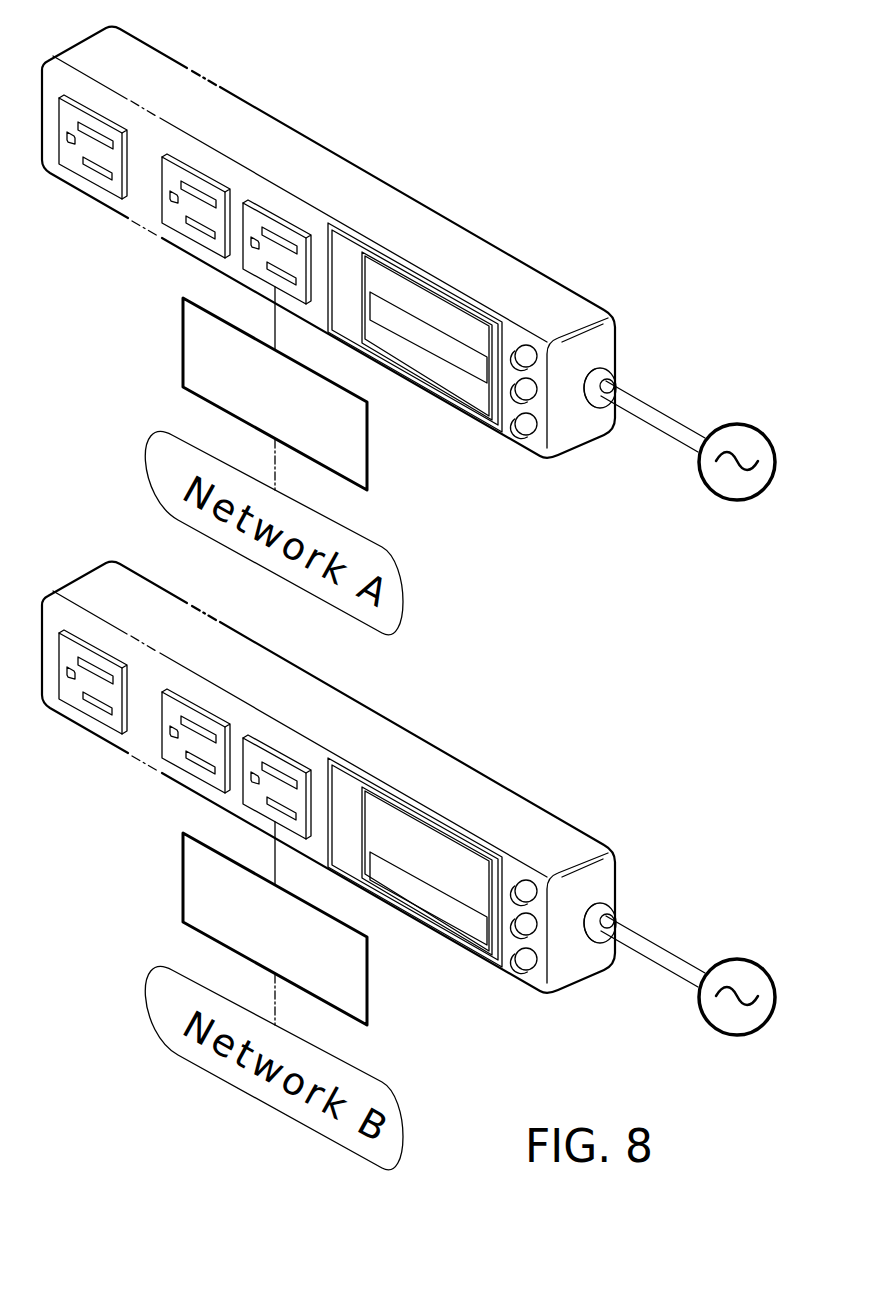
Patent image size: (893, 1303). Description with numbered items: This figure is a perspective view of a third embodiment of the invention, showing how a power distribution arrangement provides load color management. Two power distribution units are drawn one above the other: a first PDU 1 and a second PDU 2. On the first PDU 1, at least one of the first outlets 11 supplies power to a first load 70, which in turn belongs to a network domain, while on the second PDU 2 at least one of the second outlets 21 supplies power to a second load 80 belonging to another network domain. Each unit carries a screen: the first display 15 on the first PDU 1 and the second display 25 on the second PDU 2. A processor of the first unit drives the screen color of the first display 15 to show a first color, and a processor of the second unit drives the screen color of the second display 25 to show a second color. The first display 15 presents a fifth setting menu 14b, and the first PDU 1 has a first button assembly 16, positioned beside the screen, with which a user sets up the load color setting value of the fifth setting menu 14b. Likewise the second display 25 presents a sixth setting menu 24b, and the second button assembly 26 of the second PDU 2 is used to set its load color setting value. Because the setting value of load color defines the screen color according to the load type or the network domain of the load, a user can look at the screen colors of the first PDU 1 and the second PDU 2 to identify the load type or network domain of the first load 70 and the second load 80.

The first PDU 1 is at (408, 266).
The second PDU 2 is at (408, 801).
The first outlet 11 is at (277, 213).
The second outlet 21 is at (277, 725).
The fifth setting menu 14b is at (467, 330).
The sixth setting menu 24b is at (474, 854).
The first display 15 is at (453, 295).
The second display 25 is at (453, 830).
The first button assembly 16 is at (520, 433).
The second button assembly 26 is at (506, 960).
The first load 70 is at (182, 340).
The second load 80 is at (236, 923).